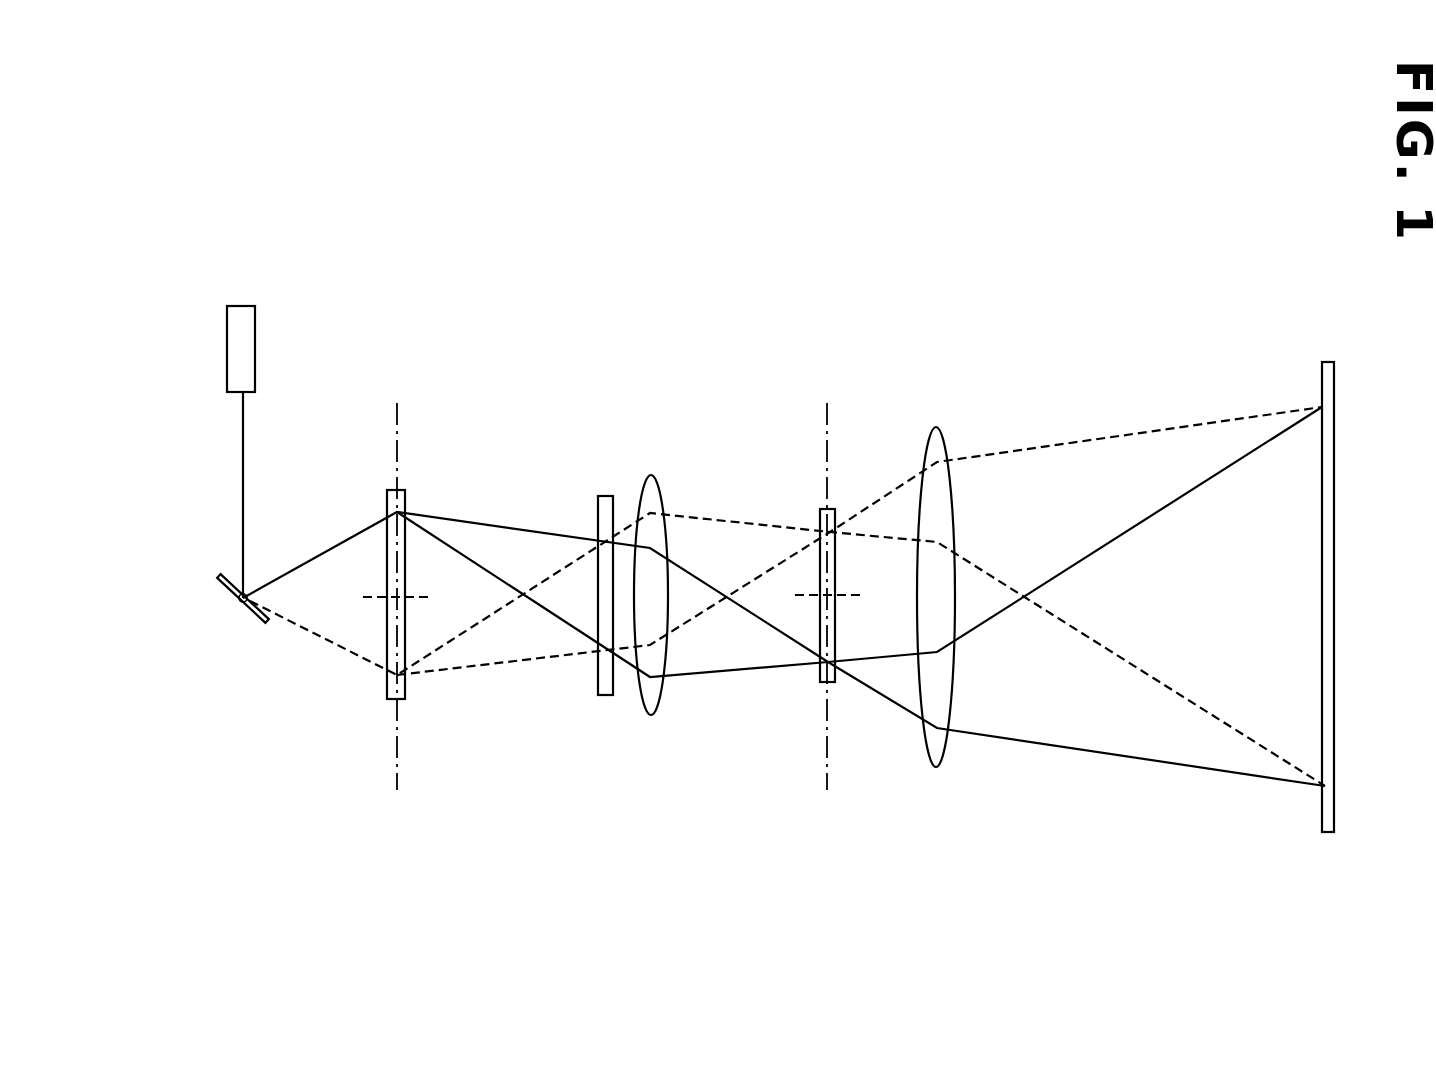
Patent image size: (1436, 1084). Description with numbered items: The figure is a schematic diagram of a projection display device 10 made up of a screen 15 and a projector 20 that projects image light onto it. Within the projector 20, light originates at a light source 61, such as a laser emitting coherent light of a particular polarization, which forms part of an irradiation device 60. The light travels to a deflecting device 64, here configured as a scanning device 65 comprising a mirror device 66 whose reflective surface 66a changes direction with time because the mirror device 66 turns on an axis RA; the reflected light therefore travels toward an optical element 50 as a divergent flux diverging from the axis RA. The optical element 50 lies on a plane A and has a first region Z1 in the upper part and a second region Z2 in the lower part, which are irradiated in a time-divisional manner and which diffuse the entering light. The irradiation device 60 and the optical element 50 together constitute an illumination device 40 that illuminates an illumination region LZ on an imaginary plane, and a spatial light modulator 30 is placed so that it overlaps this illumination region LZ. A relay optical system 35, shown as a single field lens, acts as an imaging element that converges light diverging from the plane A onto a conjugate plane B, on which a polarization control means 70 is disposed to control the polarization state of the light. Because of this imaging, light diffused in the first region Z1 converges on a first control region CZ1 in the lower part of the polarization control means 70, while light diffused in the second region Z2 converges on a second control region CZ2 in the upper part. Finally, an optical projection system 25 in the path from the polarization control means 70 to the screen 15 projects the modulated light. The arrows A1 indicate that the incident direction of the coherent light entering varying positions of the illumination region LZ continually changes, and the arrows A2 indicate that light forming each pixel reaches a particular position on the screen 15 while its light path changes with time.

The projection display device 10 is at (774, 244).
The screen 15 is at (1328, 352).
The projector 20 is at (831, 342).
The optical projection system 25 is at (933, 414).
The spatial light modulator 30 is at (606, 486).
The relay optical system 35 is at (651, 467).
The illumination device 40 is at (419, 385).
The optical element 50 is at (408, 482).
The irradiation device 60 is at (238, 514).
The light source 61 is at (248, 351).
The deflecting device 64 is at (247, 648).
The scanning device 65 is at (247, 648).
The mirror device 66 is at (247, 616).
The reflective surface 66a is at (236, 588).
The polarization control means 70 is at (840, 494).
The plane A is at (400, 735).
The conjugate plane B is at (830, 745).
The arrows A1 is at (553, 537).
The arrows A2 is at (1228, 461).
The first region Z1 is at (378, 597).
The second region Z2 is at (378, 597).
The illumination region LZ is at (593, 535).
The first control region CZ1 is at (817, 597).
The second control region CZ2 is at (817, 597).
The axis RA is at (238, 603).